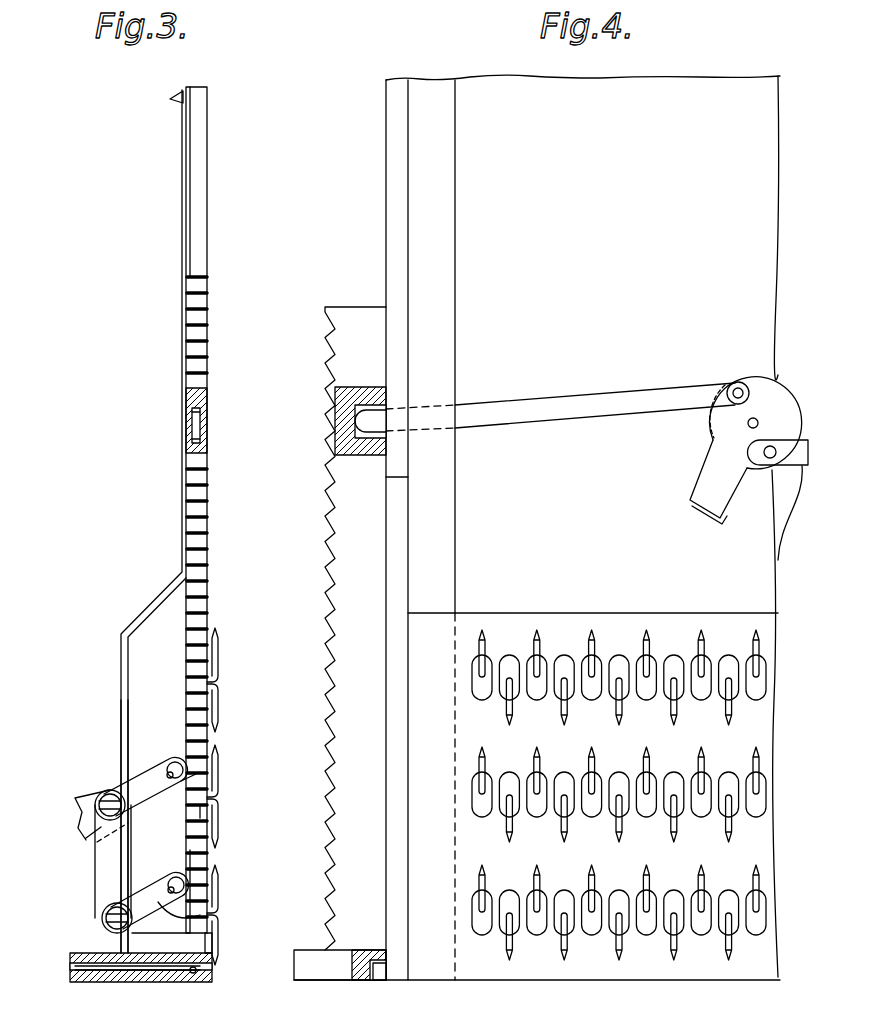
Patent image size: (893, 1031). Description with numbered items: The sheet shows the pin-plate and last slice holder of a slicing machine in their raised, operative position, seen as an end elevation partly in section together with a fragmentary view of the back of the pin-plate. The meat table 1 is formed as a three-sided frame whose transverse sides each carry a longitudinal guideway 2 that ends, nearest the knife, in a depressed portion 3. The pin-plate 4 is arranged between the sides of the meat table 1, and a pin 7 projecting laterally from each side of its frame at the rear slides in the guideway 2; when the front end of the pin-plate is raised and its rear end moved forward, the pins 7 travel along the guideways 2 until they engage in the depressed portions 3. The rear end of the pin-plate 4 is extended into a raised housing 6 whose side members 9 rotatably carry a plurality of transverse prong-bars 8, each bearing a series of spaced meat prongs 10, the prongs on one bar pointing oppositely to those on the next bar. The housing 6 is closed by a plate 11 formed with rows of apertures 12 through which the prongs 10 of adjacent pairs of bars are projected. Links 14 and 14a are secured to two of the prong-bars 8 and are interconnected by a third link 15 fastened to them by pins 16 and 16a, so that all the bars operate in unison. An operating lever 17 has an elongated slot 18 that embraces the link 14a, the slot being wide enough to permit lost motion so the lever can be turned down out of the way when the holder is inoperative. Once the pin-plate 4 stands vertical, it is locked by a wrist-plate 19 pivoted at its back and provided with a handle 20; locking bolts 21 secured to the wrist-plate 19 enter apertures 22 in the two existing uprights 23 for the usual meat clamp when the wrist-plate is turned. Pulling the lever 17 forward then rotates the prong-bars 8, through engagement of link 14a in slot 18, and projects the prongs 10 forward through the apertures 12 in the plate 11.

In FIG. 3, the meat table 1 is at (206, 968).
In FIG. 4, the meat table 1 is at (345, 965).
In FIG. 3, the guideway 2 is at (105, 964).
In FIG. 3, the depressed portion 3 is at (186, 975).
In FIG. 4, the depressed portion 3 is at (362, 975).
In FIG. 3, the pin-plate 4 is at (185, 496).
In FIG. 4, the pin-plate 4 is at (583, 527).
In FIG. 3, the housing 6 is at (120, 653).
In FIG. 3, the pin 7 is at (195, 975).
In FIG. 4, the pin 7 is at (380, 975).
In FIG. 3, the prong-bar 8 is at (182, 768).
In FIG. 3, the side member 9 is at (140, 692).
In FIG. 3, the meat prong 10 is at (220, 712).
In FIG. 4, the meat prong 10 is at (650, 652).
In FIG. 4, the plate 11 is at (705, 960).
In FIG. 4, the aperture 12 is at (570, 660).
In FIG. 3, the link 14 is at (165, 905).
In FIG. 3, the link 14a is at (150, 766).
In FIG. 3, the third link 15 is at (108, 873).
In FIG. 3, the pin 16 is at (103, 921).
In FIG. 3, the pin 16a is at (104, 795).
In FIG. 3, the operating lever 17 is at (80, 810).
In FIG. 3, the elongated slot 18 is at (207, 812).
In FIG. 4, the wrist-plate 19 is at (730, 425).
In FIG. 4, the handle 20 is at (700, 495).
In FIG. 3, the locking bolt 21 is at (190, 423).
In FIG. 4, the locking bolt 21 is at (555, 395).
In FIG. 3, the aperture 22 is at (200, 408).
In FIG. 4, the aperture 22 is at (340, 440).
In FIG. 3, the upright 23 is at (197, 300).
In FIG. 4, the upright 23 is at (340, 580).